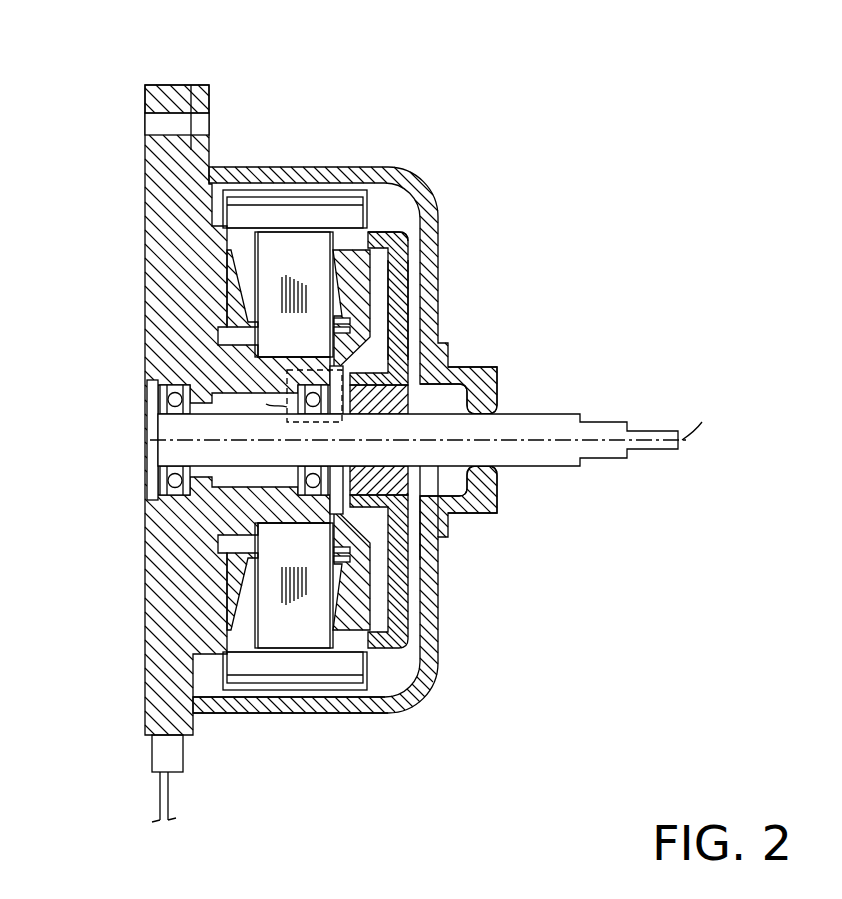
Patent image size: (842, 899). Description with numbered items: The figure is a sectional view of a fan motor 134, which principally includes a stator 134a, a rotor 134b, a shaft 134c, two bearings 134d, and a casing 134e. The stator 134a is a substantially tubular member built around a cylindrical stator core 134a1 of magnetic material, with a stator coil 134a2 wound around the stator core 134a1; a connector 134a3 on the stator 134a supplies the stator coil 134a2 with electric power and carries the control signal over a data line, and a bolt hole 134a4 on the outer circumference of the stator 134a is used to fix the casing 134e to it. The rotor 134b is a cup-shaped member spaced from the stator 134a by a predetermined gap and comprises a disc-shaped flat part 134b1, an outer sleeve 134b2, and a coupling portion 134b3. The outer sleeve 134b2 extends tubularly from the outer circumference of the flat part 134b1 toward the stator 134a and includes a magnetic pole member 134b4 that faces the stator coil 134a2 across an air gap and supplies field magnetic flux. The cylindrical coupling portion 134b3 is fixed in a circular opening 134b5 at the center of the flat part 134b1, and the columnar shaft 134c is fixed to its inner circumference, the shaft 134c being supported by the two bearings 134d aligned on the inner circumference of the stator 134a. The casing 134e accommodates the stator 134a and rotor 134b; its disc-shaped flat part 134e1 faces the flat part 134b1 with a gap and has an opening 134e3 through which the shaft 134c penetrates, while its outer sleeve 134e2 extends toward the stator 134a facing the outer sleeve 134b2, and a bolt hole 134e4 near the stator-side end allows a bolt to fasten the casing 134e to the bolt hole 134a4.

The fan motor 134 is at (487, 56).
The stator 134a is at (145, 160).
The stator core 134a1 is at (298, 245).
The stator coil 134a2 is at (240, 252).
The connector 134a3 is at (174, 750).
The bolt hole 134a4 is at (147, 120).
The rotor 134b is at (422, 324).
The flat part 134b1 is at (408, 273).
The outer sleeve 134b2 is at (365, 168).
The coupling portion 134b3 is at (407, 412).
The magnetic pole member 134b4 is at (315, 665).
The opening 134b5 is at (443, 351).
The shaft 134c is at (601, 427).
The bearings 134d is at (308, 410).
The casing 134e is at (425, 192).
The flat part 134e1 is at (432, 562).
The outer sleeve 134e2 is at (230, 717).
The opening 134e3 is at (497, 470).
The bolt hole 134e4 is at (212, 116).